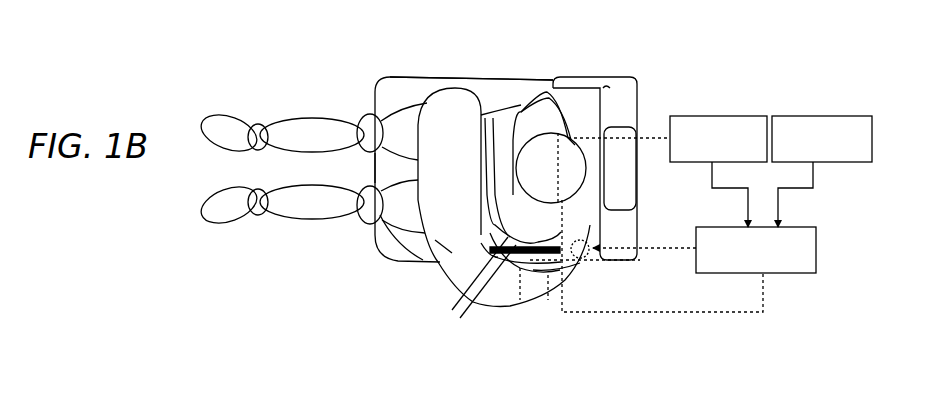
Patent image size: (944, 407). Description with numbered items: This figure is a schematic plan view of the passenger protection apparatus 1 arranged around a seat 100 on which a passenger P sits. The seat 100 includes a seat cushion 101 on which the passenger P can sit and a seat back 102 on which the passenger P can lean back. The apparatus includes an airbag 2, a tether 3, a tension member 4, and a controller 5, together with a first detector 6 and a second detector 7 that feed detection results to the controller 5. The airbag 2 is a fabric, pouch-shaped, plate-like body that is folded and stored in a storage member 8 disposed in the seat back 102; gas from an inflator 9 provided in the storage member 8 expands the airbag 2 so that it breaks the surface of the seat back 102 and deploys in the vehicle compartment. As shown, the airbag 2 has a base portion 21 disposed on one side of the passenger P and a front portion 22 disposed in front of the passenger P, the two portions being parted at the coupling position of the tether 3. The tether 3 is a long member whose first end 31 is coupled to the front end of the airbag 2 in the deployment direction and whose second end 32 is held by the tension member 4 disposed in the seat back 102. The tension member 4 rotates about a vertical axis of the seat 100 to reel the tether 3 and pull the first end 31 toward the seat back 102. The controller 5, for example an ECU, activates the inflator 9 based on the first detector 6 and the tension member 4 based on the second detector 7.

The passenger protection apparatus 1 is at (355, 50).
The airbag 2 is at (468, 83).
The tether 3 is at (520, 272).
The tension member 4 is at (547, 283).
The controller 5 is at (816, 247).
The first detector 6 is at (845, 116).
The second detector 7 is at (743, 116).
The storage member 8 is at (600, 257).
The inflator 9 is at (582, 262).
The base portion 21 is at (497, 293).
The front portion 22 is at (411, 263).
The first end 31 is at (487, 228).
The second end 32 is at (562, 242).
The seat 100 is at (640, 84).
The seat cushion 101 is at (418, 78).
The seat back 102 is at (627, 77).
The passenger P is at (543, 90).